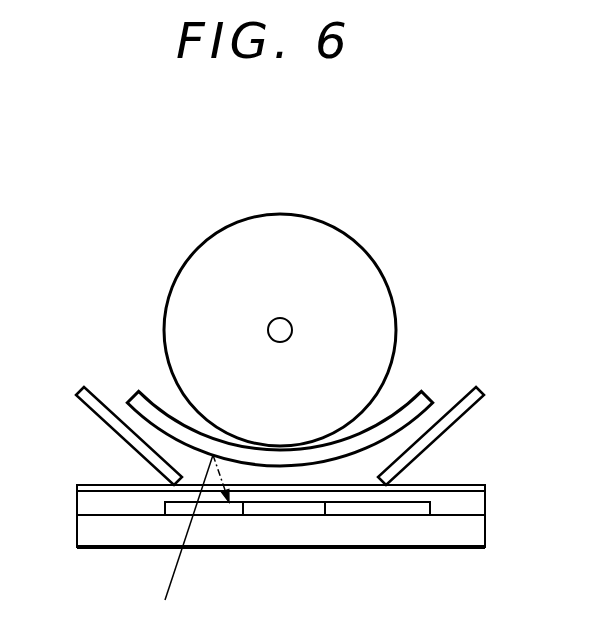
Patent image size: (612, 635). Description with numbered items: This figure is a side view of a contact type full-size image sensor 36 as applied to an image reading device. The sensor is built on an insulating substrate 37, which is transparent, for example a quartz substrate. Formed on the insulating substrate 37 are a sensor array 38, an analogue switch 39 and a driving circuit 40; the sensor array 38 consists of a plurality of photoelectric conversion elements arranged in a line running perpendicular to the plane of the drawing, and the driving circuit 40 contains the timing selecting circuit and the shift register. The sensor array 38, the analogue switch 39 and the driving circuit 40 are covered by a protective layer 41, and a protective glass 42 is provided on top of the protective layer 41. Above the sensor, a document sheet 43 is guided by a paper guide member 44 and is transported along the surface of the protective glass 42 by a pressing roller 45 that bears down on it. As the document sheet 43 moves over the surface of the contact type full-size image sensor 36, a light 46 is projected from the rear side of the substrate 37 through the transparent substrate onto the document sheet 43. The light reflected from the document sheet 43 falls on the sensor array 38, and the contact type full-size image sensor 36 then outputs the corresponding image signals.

The contact type full-size image sensor 36 is at (405, 532).
The insulating substrate 37 is at (458, 532).
The sensor array 38 is at (212, 512).
The analogue switch 39 is at (282, 512).
The driving circuit 40 is at (352, 512).
The protective layer 41 is at (113, 498).
The protective glass 42 is at (445, 485).
The document sheet 43 is at (148, 410).
The paper guide member 44 is at (460, 405).
The pressing roller 45 is at (225, 245).
The light 46 is at (168, 582).